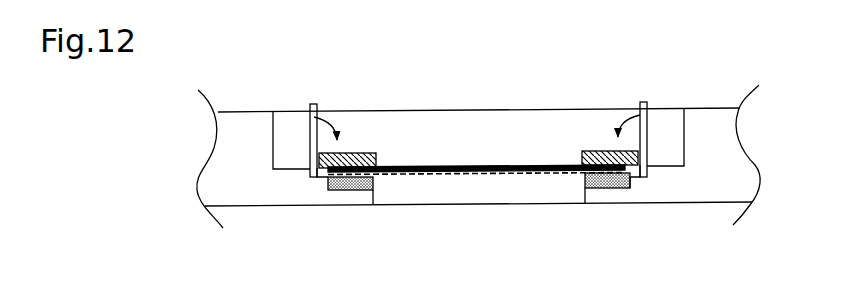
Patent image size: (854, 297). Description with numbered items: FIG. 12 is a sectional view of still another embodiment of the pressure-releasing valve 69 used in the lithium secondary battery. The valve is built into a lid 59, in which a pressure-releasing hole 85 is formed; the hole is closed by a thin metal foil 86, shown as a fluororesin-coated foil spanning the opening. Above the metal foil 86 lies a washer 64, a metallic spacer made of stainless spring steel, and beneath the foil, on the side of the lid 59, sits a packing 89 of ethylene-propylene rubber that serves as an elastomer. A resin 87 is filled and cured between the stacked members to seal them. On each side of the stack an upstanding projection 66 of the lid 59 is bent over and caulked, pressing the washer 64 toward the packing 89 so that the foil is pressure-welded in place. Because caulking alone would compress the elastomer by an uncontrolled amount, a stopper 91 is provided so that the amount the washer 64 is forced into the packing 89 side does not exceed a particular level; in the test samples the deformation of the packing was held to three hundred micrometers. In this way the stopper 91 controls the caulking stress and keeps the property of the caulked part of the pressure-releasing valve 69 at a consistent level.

The lid 59 is at (230, 163).
The washer 64 is at (366, 152).
The projection 66 is at (312, 103).
The pressure-releasing valve 69 is at (445, 151).
The pressure-releasing hole 85 is at (436, 189).
The metal foil 86 is at (528, 166).
The resin 87 is at (505, 175).
The packing 89 is at (336, 190).
The stopper 91 is at (323, 180).